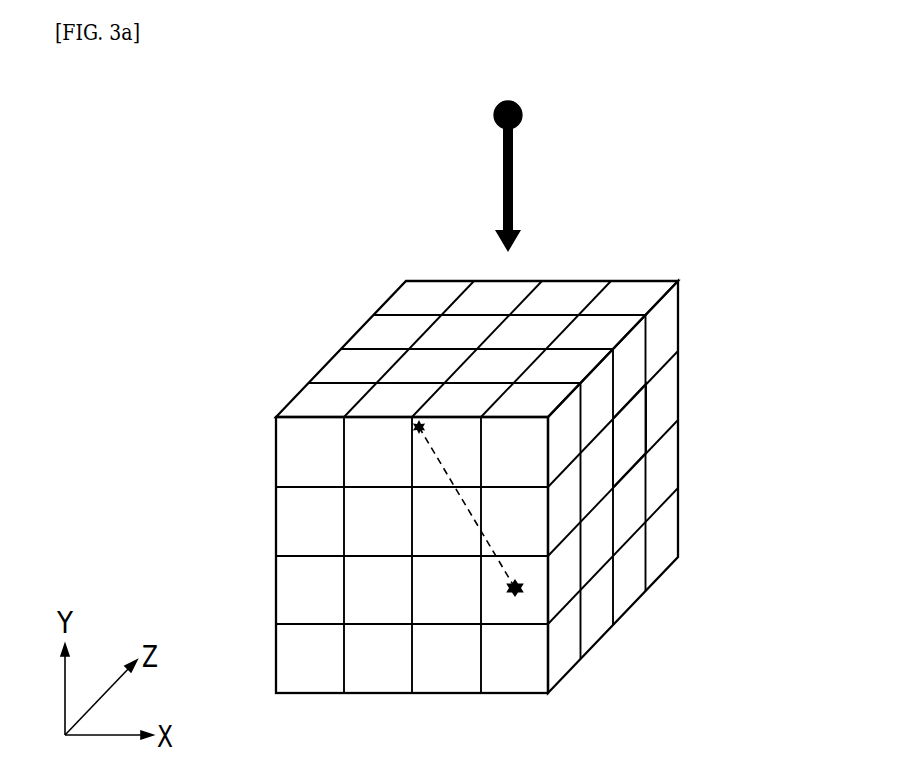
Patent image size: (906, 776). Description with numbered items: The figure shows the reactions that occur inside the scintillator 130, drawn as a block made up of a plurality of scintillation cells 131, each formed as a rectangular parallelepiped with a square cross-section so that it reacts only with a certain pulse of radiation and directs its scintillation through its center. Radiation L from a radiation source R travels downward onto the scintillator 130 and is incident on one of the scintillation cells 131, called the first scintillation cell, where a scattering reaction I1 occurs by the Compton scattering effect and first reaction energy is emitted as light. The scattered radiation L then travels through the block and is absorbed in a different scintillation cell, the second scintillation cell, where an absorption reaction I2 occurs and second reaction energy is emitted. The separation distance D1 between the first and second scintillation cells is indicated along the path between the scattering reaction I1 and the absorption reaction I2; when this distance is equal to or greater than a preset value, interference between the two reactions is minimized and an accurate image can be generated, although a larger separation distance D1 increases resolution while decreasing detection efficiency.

The scintillator 130 is at (647, 262).
The scintillation cell 131 is at (630, 417).
The separation distance D1 is at (473, 515).
The scattering reaction I1 is at (419, 427).
The absorption reaction I2 is at (513, 597).
The radiation source R is at (496, 105).
The radiation L is at (513, 172).